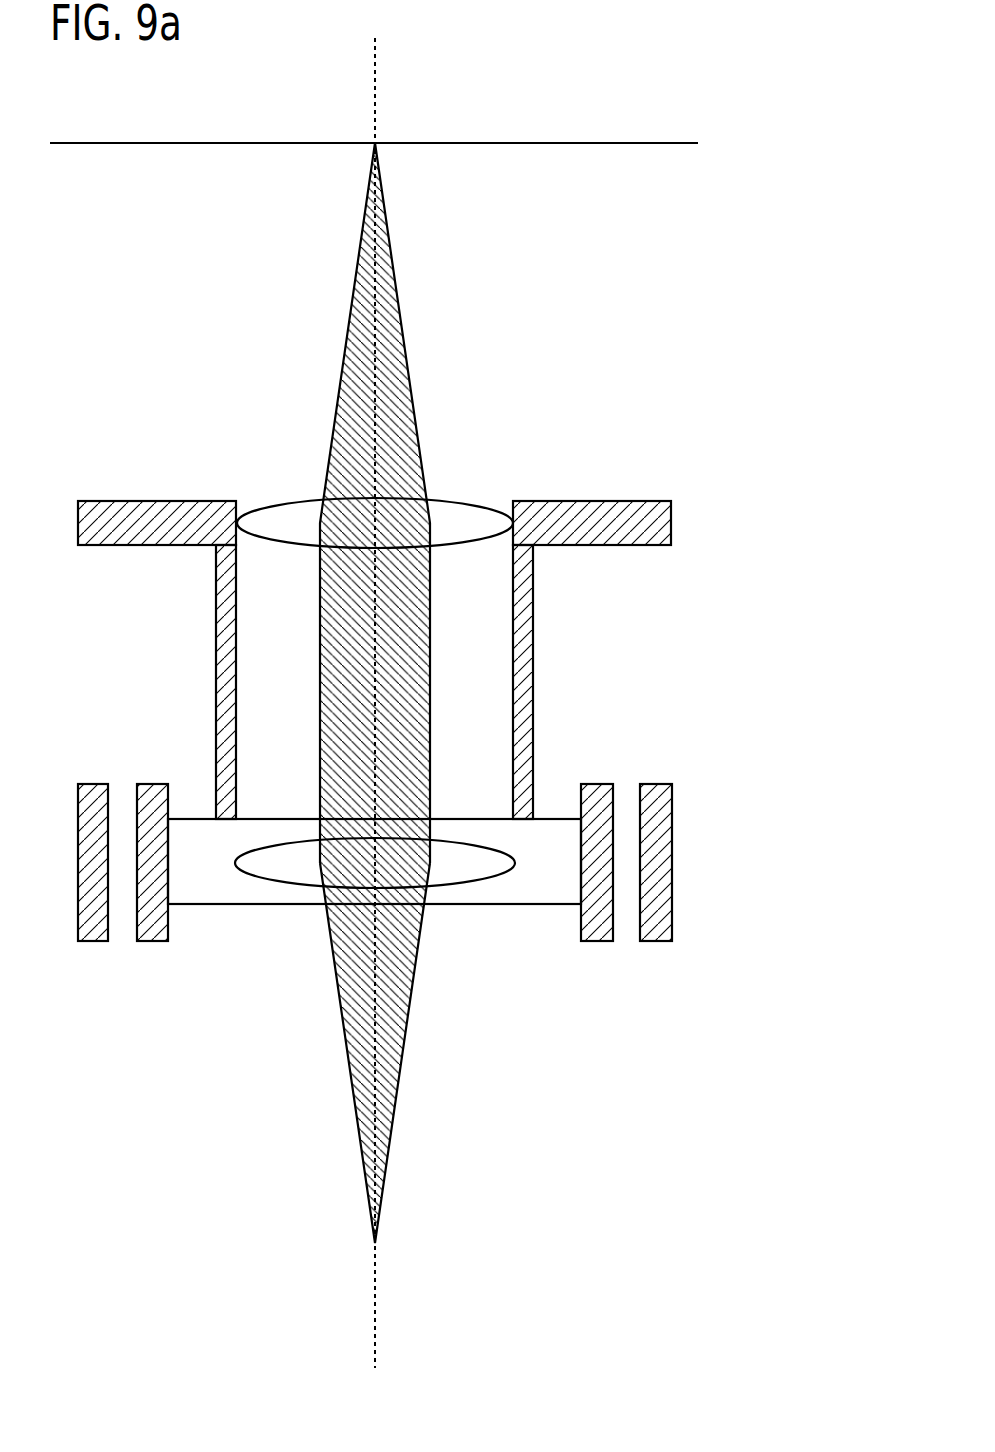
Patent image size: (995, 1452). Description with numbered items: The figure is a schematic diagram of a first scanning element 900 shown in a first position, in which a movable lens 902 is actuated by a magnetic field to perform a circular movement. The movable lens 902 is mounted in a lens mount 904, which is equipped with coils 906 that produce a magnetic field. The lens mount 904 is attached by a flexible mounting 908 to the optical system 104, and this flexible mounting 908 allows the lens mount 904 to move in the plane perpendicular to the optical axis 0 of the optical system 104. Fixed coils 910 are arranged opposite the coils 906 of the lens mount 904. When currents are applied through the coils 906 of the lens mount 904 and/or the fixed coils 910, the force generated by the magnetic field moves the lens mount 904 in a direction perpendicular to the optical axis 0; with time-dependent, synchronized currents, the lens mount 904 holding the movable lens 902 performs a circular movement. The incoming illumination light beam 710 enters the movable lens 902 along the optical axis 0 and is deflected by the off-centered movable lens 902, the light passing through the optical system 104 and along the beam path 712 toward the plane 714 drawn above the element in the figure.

The focal plane / object plane 714 is at (600, 146).
The optical system 104 is at (463, 499).
The flexible mounting 908 is at (535, 611).
The beam path between lenses 712 is at (430, 655).
The lens mount 904 is at (607, 772).
The first scanning element 900 is at (451, 850).
The movable lens 902 is at (468, 889).
The coils 906 is at (152, 943).
The fixed coils 910 is at (93, 943).
The incoming illumination light beam 710 is at (402, 1080).
The optical axis 0 is at (378, 1308).